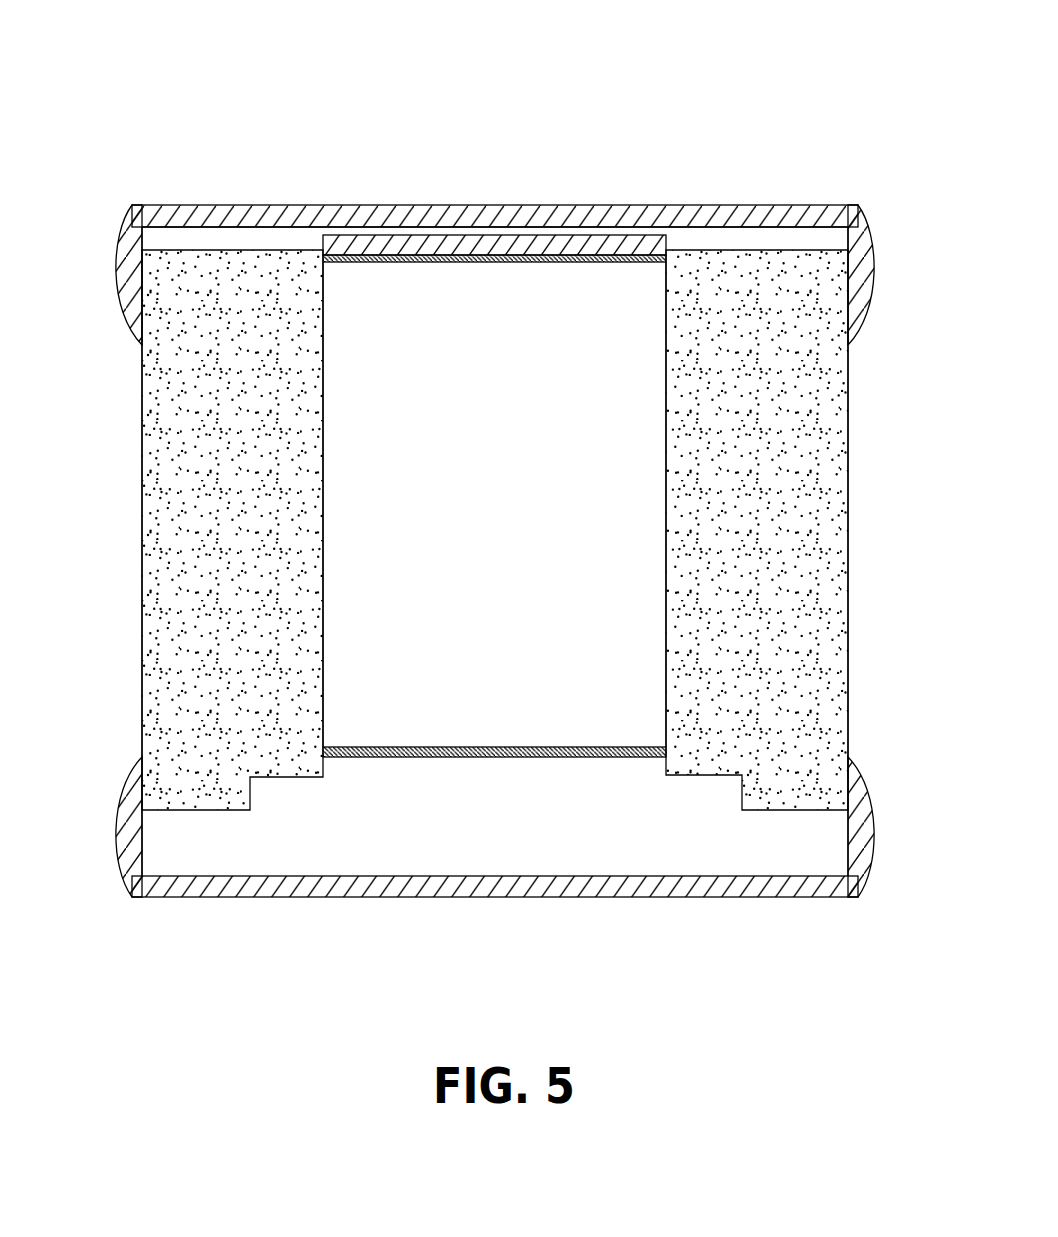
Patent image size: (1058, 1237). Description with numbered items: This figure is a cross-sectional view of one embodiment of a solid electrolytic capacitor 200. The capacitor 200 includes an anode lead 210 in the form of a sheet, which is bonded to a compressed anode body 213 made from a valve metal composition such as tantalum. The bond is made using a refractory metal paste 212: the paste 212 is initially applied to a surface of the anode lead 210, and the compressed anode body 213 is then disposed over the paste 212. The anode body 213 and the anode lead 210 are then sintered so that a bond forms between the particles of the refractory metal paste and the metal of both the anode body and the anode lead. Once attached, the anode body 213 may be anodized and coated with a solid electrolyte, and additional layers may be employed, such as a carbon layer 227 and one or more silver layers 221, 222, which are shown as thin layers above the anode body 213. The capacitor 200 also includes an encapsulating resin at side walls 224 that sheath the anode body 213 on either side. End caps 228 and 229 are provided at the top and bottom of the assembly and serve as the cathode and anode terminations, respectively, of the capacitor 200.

The capacitor 200 is at (495, 498).
The anode lead 210 is at (323, 847).
The paste 212 is at (448, 747).
The compressed anode body 213 is at (512, 480).
The silver layer 221 is at (565, 271).
The silver layer 222 is at (703, 240).
The side walls 224 is at (170, 563).
The carbon layer 227 is at (433, 260).
The end cap 228 is at (227, 217).
The end cap 229 is at (725, 890).